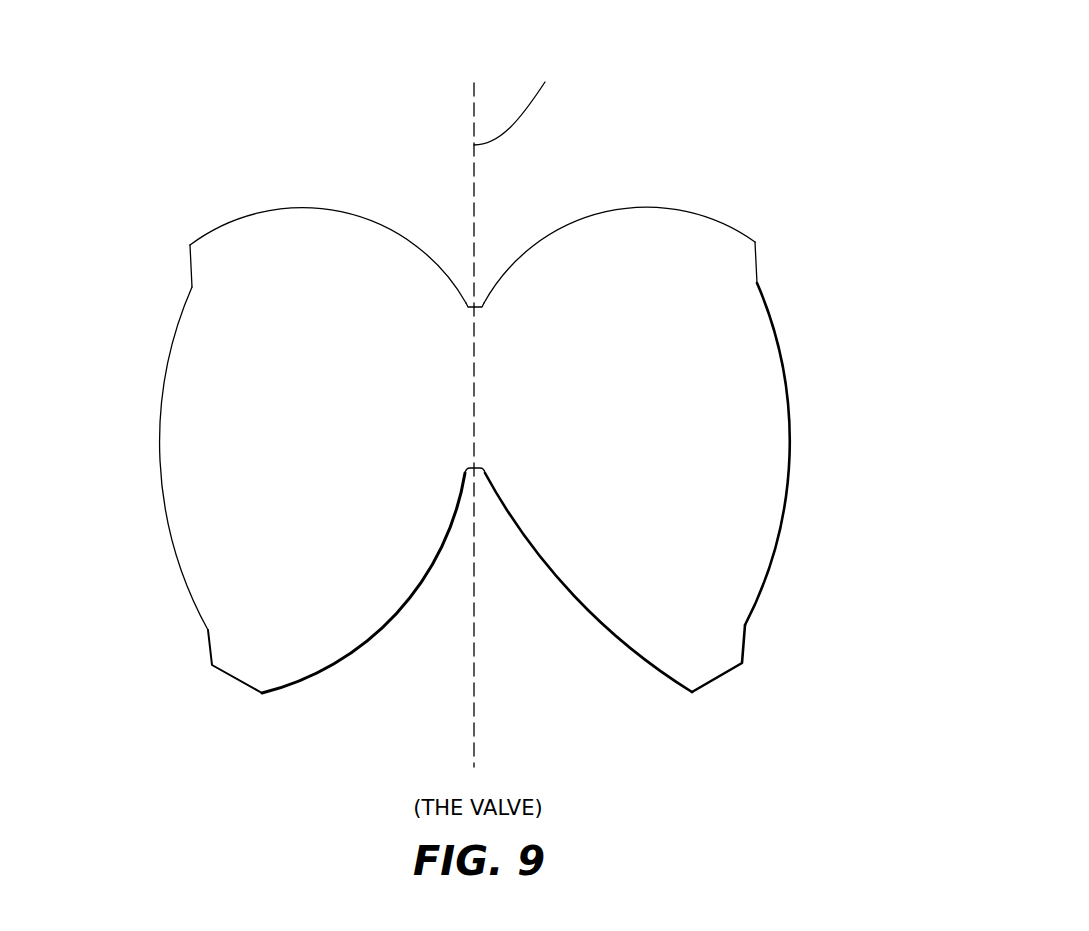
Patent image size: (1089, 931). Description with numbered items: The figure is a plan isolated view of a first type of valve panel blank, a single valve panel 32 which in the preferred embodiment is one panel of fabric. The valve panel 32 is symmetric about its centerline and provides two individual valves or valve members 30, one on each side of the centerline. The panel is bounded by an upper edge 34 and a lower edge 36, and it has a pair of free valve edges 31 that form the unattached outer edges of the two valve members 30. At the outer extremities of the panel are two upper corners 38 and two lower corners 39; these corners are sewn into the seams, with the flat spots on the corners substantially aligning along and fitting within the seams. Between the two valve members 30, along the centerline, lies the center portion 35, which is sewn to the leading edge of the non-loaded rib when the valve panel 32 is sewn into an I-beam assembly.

The valve member 30 is at (564, 423).
The free valve edge 31 is at (162, 368).
The valve panel 32 is at (820, 107).
The upper edge 34 is at (645, 118).
The center portion 35 is at (468, 435).
The lower edge 36 is at (562, 620).
The upper corner 38 is at (757, 272).
The lower corner 39 is at (707, 665).